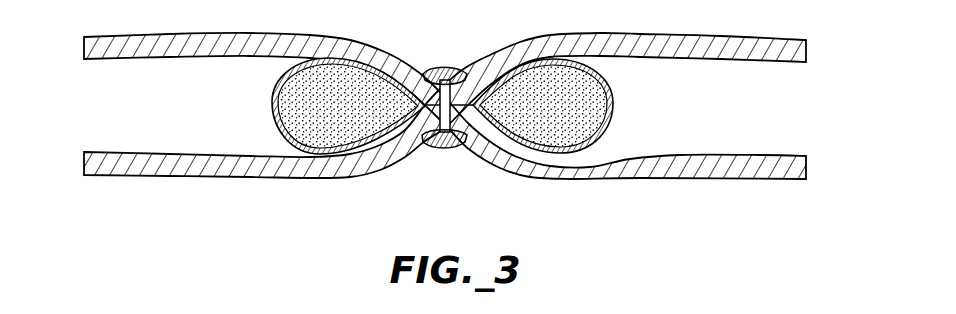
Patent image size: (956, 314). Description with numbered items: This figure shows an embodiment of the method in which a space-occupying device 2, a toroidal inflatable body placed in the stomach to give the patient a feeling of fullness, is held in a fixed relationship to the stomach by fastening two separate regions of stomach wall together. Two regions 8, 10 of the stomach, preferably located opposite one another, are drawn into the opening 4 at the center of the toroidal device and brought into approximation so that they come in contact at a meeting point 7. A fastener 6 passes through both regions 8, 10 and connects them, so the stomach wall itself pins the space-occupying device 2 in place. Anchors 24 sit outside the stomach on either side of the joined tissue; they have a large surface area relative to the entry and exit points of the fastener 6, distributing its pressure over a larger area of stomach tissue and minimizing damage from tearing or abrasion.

The space-occupying device 2 is at (571, 135).
The opening 4 is at (479, 105).
The fastener 6 is at (430, 137).
The meeting point 7 is at (367, 165).
The first region of the stomach 8 is at (417, 77).
The second region of the stomach 10 is at (472, 147).
The anchors 24 is at (447, 68).